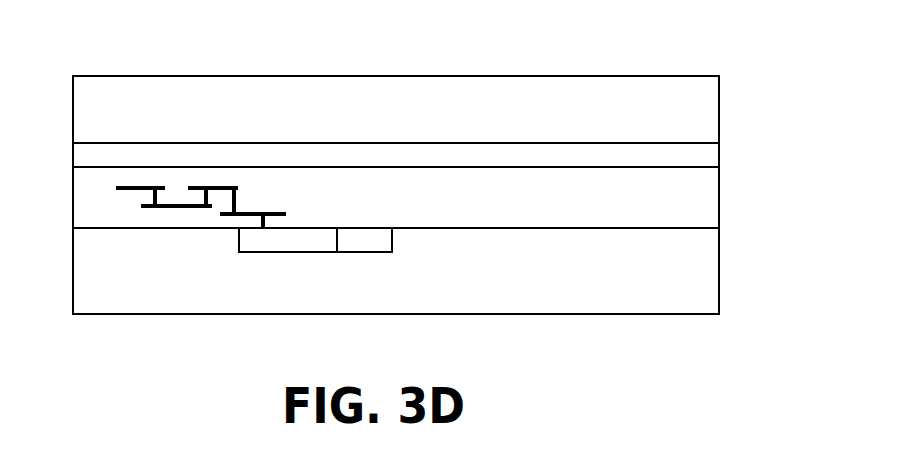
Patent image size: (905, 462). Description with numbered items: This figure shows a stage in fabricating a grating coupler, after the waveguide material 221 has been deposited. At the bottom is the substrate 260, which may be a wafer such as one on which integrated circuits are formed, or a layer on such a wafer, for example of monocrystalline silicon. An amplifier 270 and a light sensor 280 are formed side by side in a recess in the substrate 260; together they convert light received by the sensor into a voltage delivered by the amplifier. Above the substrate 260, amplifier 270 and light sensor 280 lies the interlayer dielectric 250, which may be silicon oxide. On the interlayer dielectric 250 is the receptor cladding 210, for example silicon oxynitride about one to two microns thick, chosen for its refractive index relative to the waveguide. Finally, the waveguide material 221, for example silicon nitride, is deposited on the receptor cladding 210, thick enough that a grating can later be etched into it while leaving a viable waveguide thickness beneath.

The waveguide material 221 is at (658, 83).
The receptor cladding 210 is at (710, 150).
The interlayer dielectric 250 is at (707, 200).
The substrate 260 is at (82, 289).
The amplifier 270 is at (288, 248).
The light sensor 280 is at (383, 248).